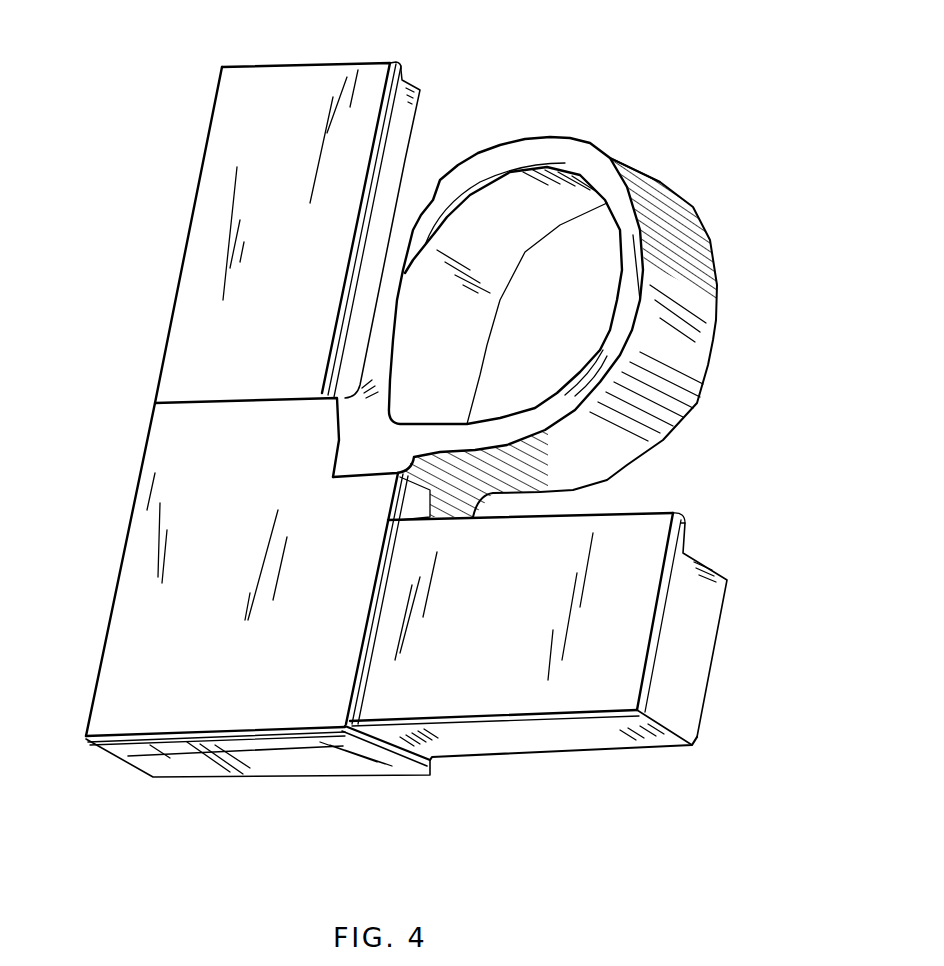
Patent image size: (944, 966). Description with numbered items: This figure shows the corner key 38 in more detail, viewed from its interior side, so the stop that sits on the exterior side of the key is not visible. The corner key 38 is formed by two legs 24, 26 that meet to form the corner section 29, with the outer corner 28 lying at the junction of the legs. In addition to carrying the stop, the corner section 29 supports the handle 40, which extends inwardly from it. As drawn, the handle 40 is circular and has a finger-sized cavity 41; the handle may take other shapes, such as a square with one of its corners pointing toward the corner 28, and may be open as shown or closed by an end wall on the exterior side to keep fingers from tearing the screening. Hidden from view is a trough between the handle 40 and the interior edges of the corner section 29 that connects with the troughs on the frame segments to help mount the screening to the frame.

The leg 24 is at (695, 655).
The leg 26 is at (369, 70).
The corner 28 is at (86, 739).
The corner section 29 is at (212, 716).
The corner key 38 is at (810, 326).
The handle 40 is at (598, 155).
The cavity 41 is at (552, 344).